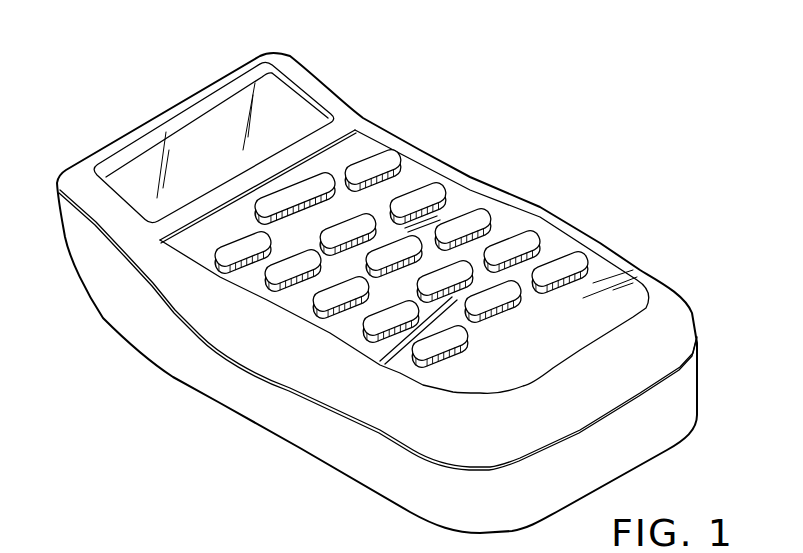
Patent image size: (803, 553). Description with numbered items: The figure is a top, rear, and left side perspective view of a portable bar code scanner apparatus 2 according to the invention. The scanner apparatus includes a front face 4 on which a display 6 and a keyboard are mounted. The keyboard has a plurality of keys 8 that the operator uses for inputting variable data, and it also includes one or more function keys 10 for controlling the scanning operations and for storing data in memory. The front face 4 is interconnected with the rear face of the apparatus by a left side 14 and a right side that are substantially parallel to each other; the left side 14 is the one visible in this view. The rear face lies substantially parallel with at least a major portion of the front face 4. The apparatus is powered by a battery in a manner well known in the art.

The portable bar code scanner apparatus 2 is at (164, 60).
The front face 4 is at (637, 302).
The display 6 is at (293, 97).
The keys 8 is at (523, 236).
The function keys 10 is at (320, 177).
The left side 14 is at (273, 408).